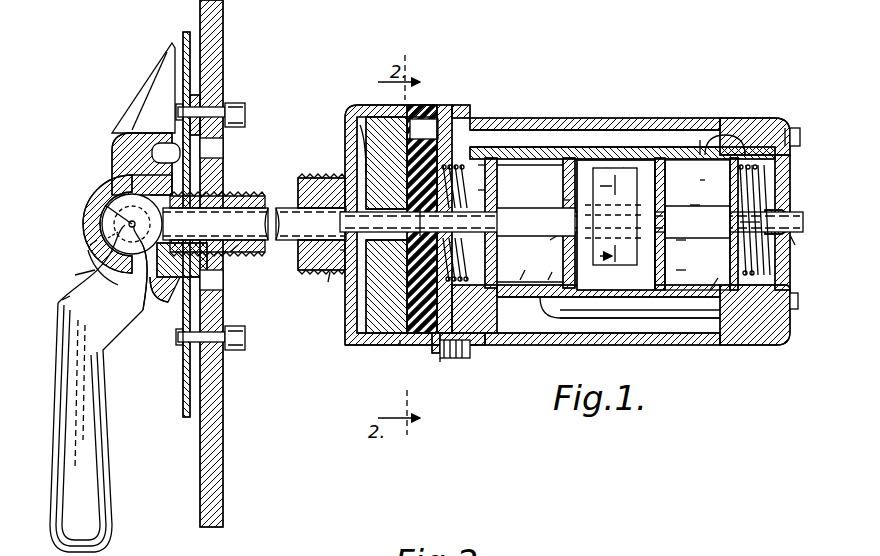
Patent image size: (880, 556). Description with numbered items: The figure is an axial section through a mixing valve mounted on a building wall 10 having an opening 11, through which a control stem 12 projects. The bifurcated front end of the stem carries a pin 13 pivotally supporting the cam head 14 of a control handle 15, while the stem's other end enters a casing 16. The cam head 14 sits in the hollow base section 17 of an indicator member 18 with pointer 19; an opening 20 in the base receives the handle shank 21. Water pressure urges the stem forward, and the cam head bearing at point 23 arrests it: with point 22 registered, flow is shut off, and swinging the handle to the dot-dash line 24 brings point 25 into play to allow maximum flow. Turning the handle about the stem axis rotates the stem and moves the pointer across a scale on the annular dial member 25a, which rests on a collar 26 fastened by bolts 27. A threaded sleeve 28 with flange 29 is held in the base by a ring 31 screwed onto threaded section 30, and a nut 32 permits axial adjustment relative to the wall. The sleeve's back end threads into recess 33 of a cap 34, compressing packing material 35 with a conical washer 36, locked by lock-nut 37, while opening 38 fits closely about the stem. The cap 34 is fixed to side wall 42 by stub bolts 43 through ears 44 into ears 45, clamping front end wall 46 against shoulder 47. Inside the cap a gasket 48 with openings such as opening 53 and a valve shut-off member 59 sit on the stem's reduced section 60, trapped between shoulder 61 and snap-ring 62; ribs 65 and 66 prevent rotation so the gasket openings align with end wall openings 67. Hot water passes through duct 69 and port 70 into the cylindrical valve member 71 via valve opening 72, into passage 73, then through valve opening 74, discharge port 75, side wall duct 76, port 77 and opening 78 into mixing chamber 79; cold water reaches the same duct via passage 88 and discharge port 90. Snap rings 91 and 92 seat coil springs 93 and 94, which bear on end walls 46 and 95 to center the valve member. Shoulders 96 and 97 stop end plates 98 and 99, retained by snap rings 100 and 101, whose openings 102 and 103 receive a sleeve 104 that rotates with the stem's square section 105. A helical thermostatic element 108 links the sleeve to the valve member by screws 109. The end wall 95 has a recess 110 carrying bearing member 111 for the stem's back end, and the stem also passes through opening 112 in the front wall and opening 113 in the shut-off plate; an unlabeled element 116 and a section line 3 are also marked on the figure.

The building wall 10 is at (223, 465).
The opening 11 is at (222, 150).
The control stem 12 is at (240, 210).
The pin 13 is at (108, 202).
The cam head 14 is at (86, 212).
The control handle 15 is at (98, 410).
The casing 16 is at (548, 115).
The hollow base section 17 is at (100, 182).
The indicator member 18 is at (112, 140).
The pointer 19 is at (165, 60).
The opening 20 is at (104, 258).
The shank 21 is at (150, 278).
The point 22 is at (92, 236).
The bearing point 23 is at (102, 224).
The dot-dash line 24 is at (72, 300).
The point 25 is at (95, 272).
The annular dial member 25a is at (183, 40).
The collar 26 is at (200, 98).
The bolts 27 is at (222, 112).
The exteriorly threaded sleeve 28 is at (238, 254).
The flange 29 is at (129, 267).
The threaded section 30 is at (165, 302).
The internally threaded ring 31 is at (185, 340).
The nut 32 is at (225, 290).
The recess 33 is at (333, 180).
The cap 34 is at (350, 342).
The packing material 35 is at (345, 272).
The conical washer 36 is at (321, 270).
The lock-nut 37 is at (318, 280).
The opening 38 is at (380, 190).
The side wall 42 is at (612, 146).
The stub bolts 43 is at (470, 352).
The apertured ears 44 is at (462, 356).
The ears 45 is at (442, 360).
The front end wall 46 is at (448, 178).
The shoulder 47 is at (446, 114).
The gasket 48 is at (428, 108).
The opening 53 is at (424, 129).
The valve shut-off member 59 is at (362, 126).
The reduced section 60 is at (383, 286).
The shoulder 61 is at (380, 242).
The snap-ring 62 is at (432, 222).
The radial rib 65 is at (402, 346).
The radial ribs 66 is at (434, 346).
The openings 67 is at (482, 134).
The duct 69 is at (502, 118).
The port 70 is at (722, 134).
The cylindrical valve member 71 is at (748, 148).
The valve opening 72 is at (700, 130).
The passage 73 is at (740, 125).
The valve opening 74 is at (714, 276).
The discharge port 75 is at (742, 322).
The side wall duct 76 is at (660, 330).
The port 77 is at (620, 322).
The opening 78 is at (588, 318).
The mixing chamber 79 is at (709, 186).
The passage 88 is at (475, 300).
The discharge port 90 is at (525, 296).
The snap ring 91 is at (496, 174).
The snap ring 92 is at (738, 220).
The coil spring 93 is at (490, 190).
The coil spring 94 is at (796, 130).
The end wall 95 is at (790, 268).
The shoulder 96 is at (582, 162).
The shoulder 97 is at (658, 160).
The end plate 98 is at (530, 223).
The end plate 99 is at (681, 243).
The snap ring 100 is at (549, 271).
The snap ring 101 is at (689, 266).
The opening 102 is at (552, 199).
The opening 103 is at (689, 201).
The sleeve 104 is at (545, 242).
The square section 105 is at (739, 234).
The helical thermostatic element 108 is at (701, 224).
The screws 109 is at (600, 164).
The recess 110 is at (790, 216).
The bearing member 111 is at (794, 238).
The opening 112 is at (571, 222).
The opening 113 is at (321, 224).
The terminal 116 is at (518, 271).
The section line 3 is at (615, 216).